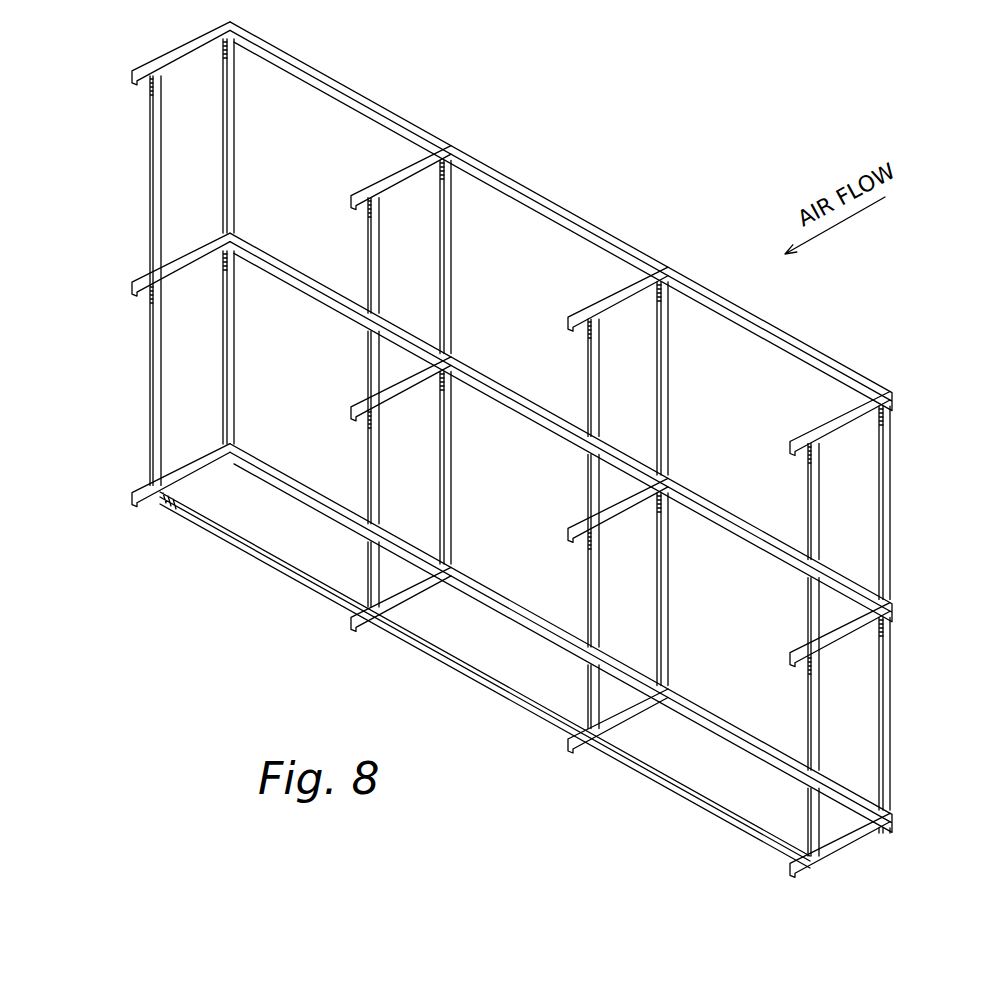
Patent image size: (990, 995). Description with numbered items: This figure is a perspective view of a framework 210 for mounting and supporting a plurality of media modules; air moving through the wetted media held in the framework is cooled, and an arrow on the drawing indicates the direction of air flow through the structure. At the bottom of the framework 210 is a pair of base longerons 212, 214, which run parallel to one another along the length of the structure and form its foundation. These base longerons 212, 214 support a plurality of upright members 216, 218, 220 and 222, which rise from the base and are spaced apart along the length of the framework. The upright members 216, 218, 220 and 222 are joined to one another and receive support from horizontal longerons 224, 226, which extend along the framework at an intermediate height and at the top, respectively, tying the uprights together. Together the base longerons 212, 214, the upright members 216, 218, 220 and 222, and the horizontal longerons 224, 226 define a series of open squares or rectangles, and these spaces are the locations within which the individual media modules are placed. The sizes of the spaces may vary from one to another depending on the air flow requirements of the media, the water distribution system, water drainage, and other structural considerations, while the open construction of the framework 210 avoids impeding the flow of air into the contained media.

The framework 210 is at (561, 449).
The base longeron 212 is at (673, 792).
The base longeron 214 is at (713, 710).
The upright member 216 is at (903, 522).
The upright member 218 is at (681, 375).
The upright member 220 is at (461, 245).
The upright member 222 is at (246, 119).
The horizontal longeron 224 is at (723, 502).
The horizontal longeron 226 is at (821, 351).